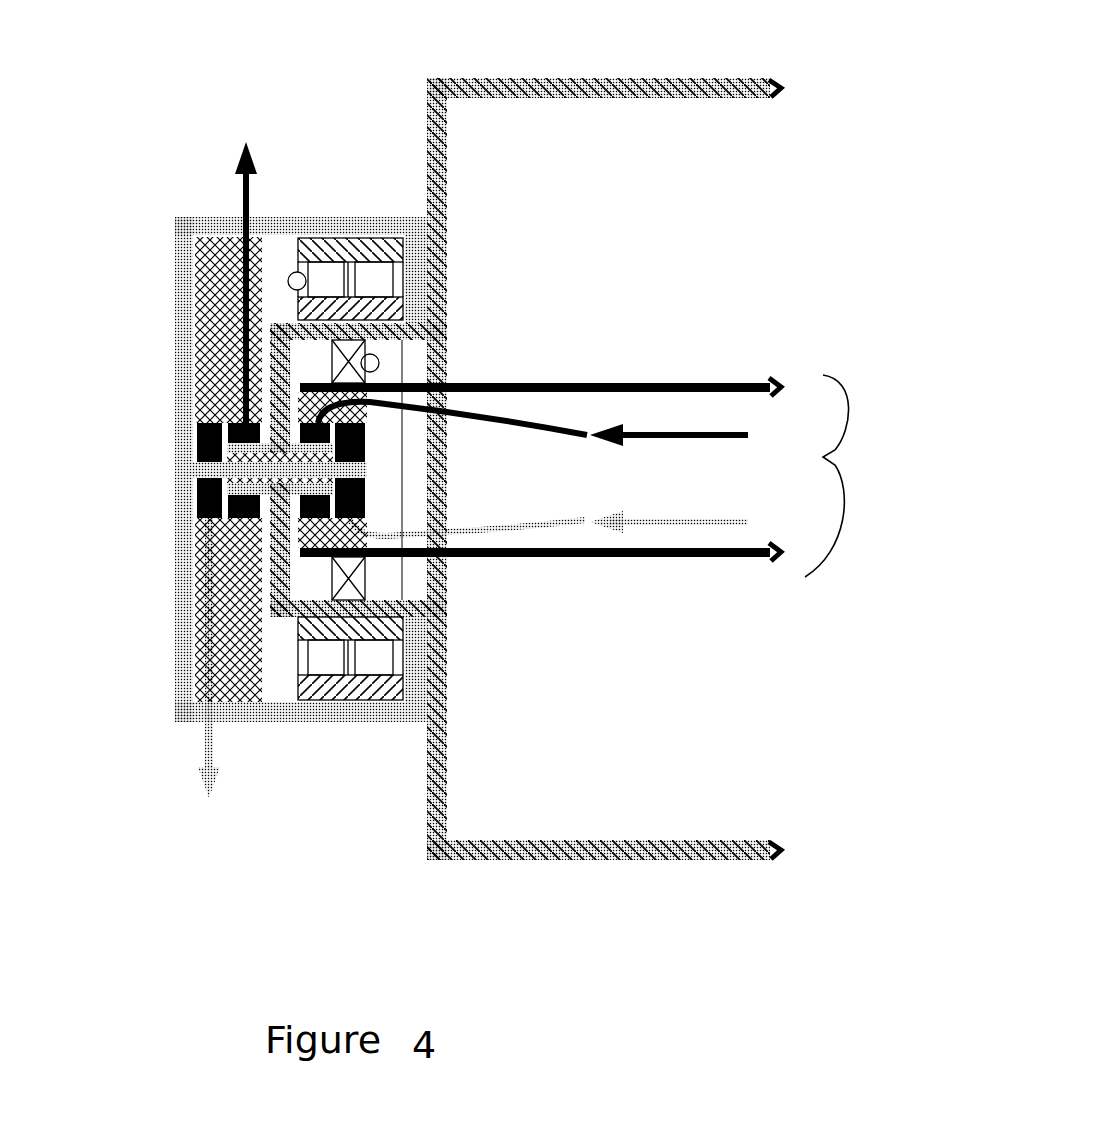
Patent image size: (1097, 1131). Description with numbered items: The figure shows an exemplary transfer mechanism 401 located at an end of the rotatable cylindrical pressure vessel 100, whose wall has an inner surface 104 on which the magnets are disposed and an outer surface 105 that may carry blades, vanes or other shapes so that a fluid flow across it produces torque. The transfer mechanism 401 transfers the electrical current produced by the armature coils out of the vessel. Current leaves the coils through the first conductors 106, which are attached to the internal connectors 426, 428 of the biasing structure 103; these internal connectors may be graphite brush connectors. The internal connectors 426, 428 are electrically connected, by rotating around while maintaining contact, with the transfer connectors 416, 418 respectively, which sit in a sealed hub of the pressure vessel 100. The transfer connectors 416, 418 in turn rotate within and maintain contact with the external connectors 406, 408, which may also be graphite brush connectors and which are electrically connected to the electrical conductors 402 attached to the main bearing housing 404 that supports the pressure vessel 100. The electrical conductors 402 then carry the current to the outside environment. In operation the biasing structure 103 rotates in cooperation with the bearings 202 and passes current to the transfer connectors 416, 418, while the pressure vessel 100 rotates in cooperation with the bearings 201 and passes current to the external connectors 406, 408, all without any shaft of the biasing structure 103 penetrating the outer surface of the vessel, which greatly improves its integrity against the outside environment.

The pressure vessel 100 is at (610, 862).
The biasing structure 103 is at (600, 476).
The inner surface 104 is at (615, 101).
The outer surface 105 is at (623, 77).
The first conductors 106 is at (648, 447).
The bearings 201 is at (323, 270).
The bearings 202 is at (390, 357).
The transfer mechanism 401 is at (256, 469).
The electrical conductors 402 is at (227, 466).
The main bearing housing 404 is at (355, 217).
The external connector 406 is at (198, 505).
The external connector 408 is at (242, 540).
The transfer connector 416 is at (195, 470).
The transfer connector 418 is at (232, 447).
The internal connector 426 is at (327, 500).
The internal connector 428 is at (365, 480).